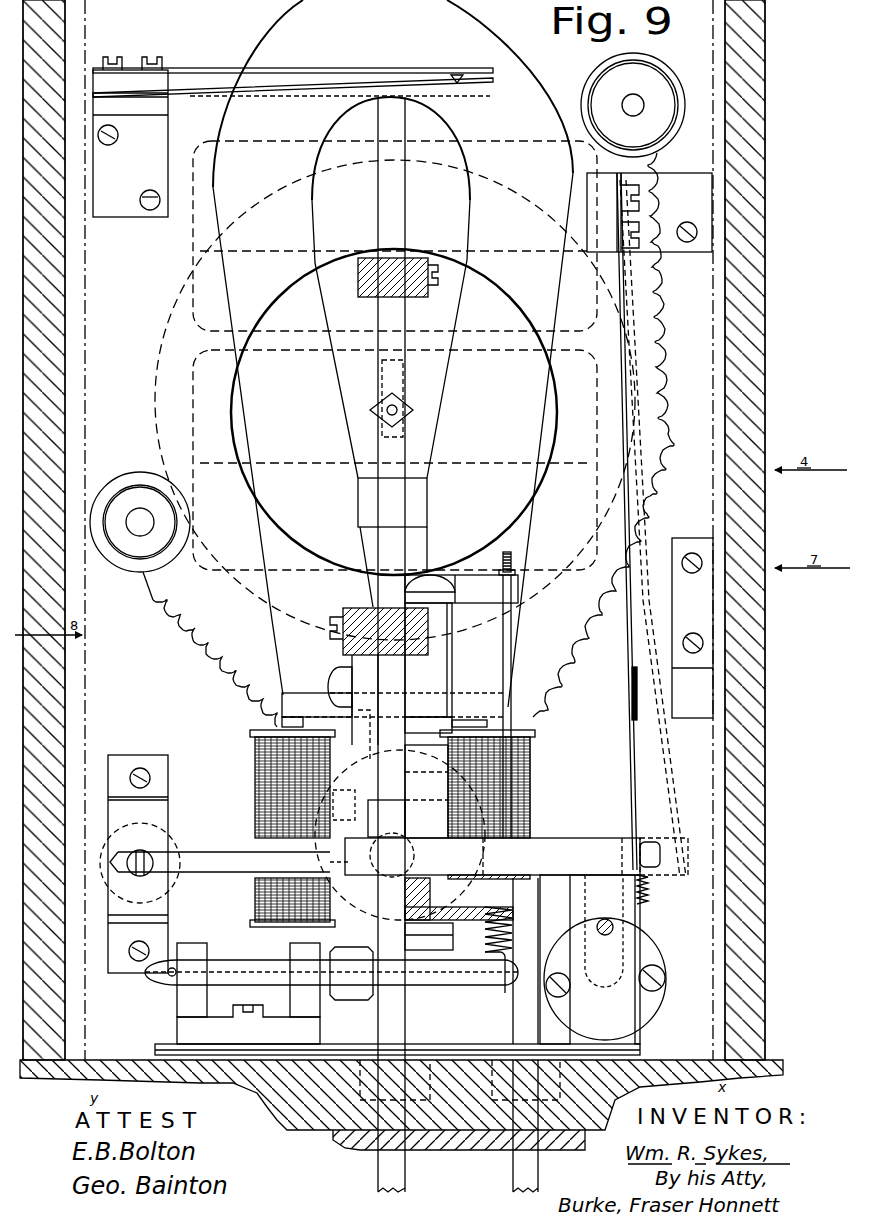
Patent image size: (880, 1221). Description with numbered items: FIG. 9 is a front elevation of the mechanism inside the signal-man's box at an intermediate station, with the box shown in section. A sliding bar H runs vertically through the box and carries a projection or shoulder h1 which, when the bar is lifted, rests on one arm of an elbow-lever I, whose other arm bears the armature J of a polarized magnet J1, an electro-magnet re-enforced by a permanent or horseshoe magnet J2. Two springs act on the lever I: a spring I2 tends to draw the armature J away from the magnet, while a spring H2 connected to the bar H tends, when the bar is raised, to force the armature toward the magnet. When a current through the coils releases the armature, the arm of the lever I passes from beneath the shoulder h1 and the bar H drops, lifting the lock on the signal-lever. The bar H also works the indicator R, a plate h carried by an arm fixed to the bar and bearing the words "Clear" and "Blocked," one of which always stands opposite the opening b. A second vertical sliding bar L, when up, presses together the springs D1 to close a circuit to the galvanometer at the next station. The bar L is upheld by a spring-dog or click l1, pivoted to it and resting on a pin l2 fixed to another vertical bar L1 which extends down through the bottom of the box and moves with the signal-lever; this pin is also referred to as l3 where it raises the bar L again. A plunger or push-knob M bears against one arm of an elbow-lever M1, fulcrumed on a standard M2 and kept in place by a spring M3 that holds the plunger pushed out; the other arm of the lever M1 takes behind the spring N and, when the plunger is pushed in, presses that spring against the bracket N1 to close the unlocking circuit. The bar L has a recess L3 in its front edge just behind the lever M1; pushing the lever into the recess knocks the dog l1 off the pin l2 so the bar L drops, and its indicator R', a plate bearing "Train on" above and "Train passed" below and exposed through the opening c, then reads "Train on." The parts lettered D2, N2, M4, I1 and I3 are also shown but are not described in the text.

The springs D1 is at (400, 70).
The terminal block D2 is at (113, 133).
The permanent or horseshoe magnet J2 is at (393, 353).
The vertical sliding bar L is at (391, 570).
The indicator R is at (374, 355).
The opening b is at (387, 239).
The opening c is at (394, 446).
The indicator R' is at (382, 400).
The guide block N2 is at (664, 200).
The spring N is at (651, 525).
The bracket N1 is at (657, 704).
The plate h is at (384, 456).
The sliding bar H is at (448, 883).
The spring H2 is at (511, 667).
The pin l3 is at (428, 660).
The spring-dog or click l1 is at (392, 707).
The projection or shoulder h1 is at (340, 687).
The pin l2 is at (467, 832).
The latch M4 is at (337, 805).
The recess L3 is at (386, 818).
The plunger or push-knob M is at (400, 835).
The elbow-lever M1 is at (516, 856).
The spring M3 is at (654, 889).
The standard M2 is at (603, 959).
The spring I2 is at (140, 864).
The elbow-lever I is at (315, 926).
The armature lever I1 is at (275, 980).
The lever base I3 is at (248, 1024).
The polarized magnet J1 is at (386, 828).
The armature J is at (458, 950).
The vertical bar L1 is at (525, 1035).